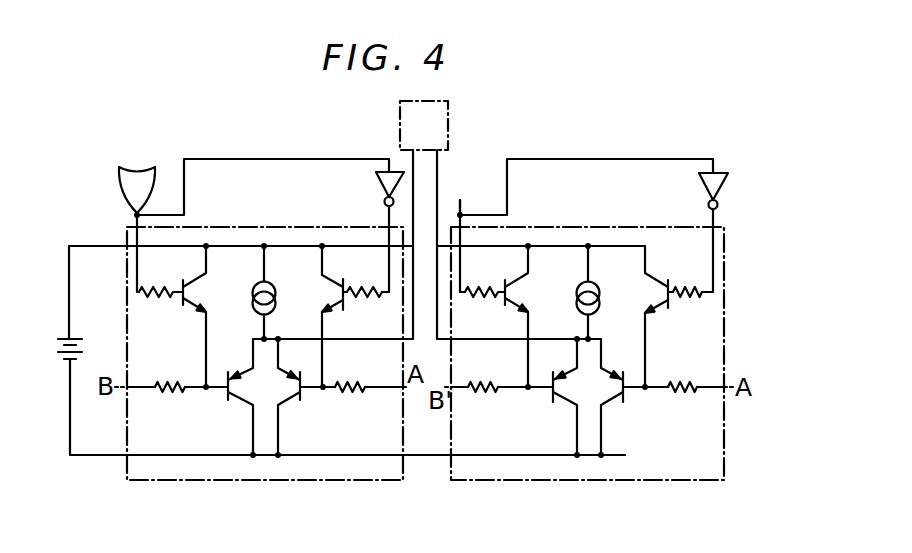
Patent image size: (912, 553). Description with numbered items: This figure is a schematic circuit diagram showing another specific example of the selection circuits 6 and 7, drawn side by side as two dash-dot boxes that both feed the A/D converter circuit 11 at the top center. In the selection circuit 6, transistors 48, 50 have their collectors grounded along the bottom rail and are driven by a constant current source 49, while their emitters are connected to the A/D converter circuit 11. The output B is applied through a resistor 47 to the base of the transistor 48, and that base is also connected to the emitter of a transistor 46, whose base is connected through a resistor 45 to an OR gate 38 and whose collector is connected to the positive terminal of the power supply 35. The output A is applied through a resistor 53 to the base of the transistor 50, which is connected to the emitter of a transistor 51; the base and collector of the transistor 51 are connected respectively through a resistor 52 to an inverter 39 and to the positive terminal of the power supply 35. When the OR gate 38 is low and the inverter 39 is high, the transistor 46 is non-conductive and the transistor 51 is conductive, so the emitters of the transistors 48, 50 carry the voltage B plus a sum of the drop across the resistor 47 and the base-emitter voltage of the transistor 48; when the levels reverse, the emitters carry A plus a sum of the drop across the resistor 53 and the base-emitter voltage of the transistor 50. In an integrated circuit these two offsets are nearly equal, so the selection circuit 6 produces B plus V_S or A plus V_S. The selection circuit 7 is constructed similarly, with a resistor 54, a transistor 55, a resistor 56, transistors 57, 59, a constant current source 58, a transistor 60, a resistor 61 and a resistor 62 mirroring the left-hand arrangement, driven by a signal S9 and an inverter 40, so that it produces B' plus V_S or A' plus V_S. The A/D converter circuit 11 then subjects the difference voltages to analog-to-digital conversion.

The selection circuit 6 is at (262, 226).
The selection circuit 7 is at (578, 226).
The A/D converter circuit 11 is at (424, 125).
The control signal S9 is at (462, 194).
The power supply 35 is at (61, 334).
The OR gate 38 is at (123, 190).
The inverter 39 is at (377, 232).
The inverter 40 is at (700, 232).
The resistor 45 is at (161, 280).
The transistor 46 is at (208, 279).
The resistor 47 is at (171, 374).
The transistor 48 is at (235, 397).
The constant current source 49 is at (280, 292).
The transistor 50 is at (295, 397).
The transistor 51 is at (323, 279).
The resistor 52 is at (362, 280).
The resistor 53 is at (352, 374).
The resistor 54 is at (482, 280).
The transistor 55 is at (528, 279).
The resistor 56 is at (482, 373).
The transistor 57 is at (575, 397).
The constant current source 58 is at (603, 292).
The transistor 59 is at (620, 397).
The transistor 60 is at (645, 279).
The resistor 61 is at (688, 280).
The resistor 62 is at (682, 373).